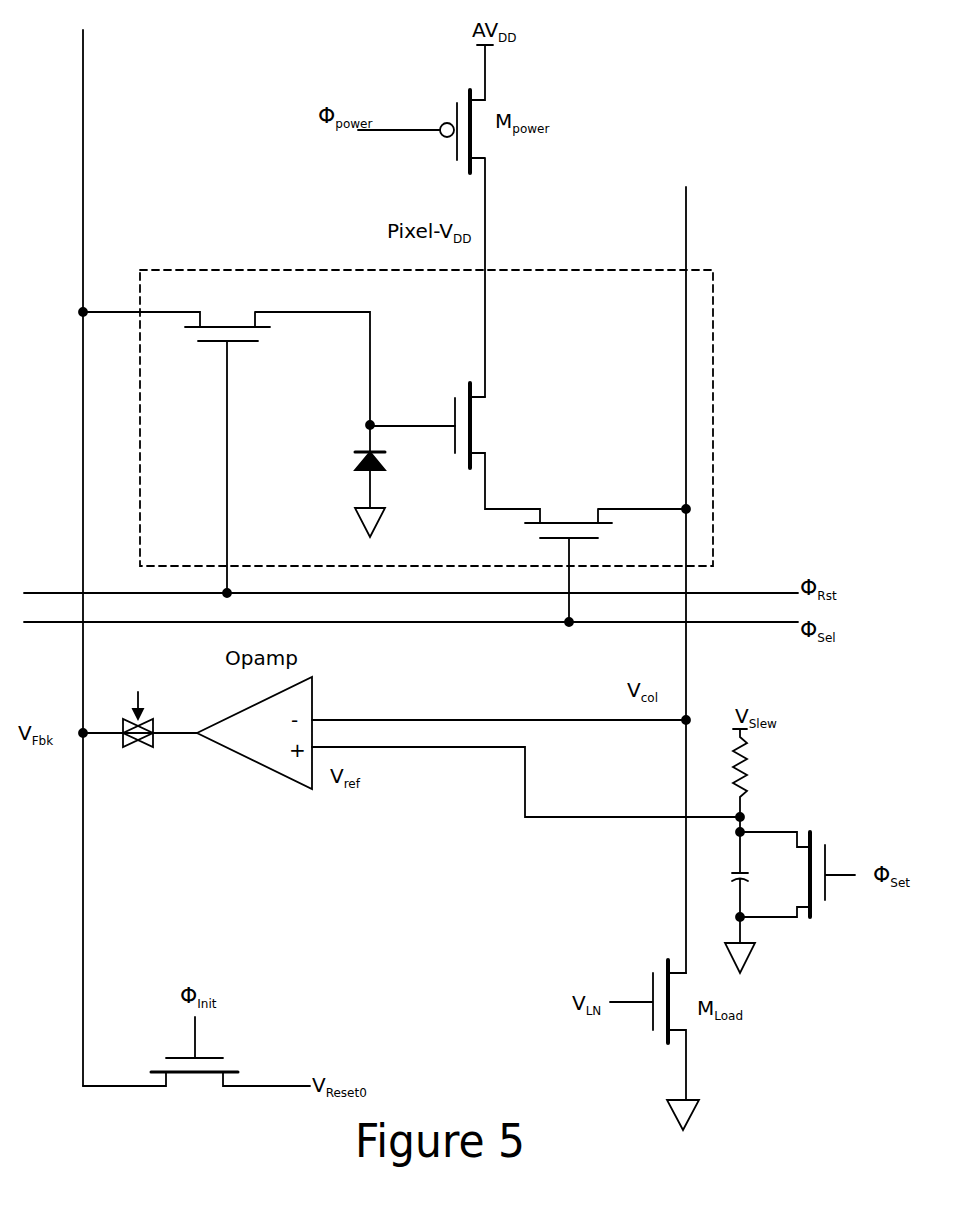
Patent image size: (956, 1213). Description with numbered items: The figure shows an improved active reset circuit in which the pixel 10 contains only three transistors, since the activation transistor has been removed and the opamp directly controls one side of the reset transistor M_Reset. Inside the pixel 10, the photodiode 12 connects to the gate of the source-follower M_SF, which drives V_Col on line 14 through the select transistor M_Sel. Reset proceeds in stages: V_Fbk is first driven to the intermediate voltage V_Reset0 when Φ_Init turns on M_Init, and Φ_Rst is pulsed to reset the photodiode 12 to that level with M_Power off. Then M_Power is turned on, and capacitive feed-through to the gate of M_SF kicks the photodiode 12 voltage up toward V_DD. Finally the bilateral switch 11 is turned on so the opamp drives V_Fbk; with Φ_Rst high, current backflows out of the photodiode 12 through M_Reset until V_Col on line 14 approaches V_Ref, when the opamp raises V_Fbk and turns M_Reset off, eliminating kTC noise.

The pixel 10 is at (428, 446).
The bilateral switch 11 is at (143, 750).
The photodiode 12 is at (350, 459).
The line 14 is at (686, 229).